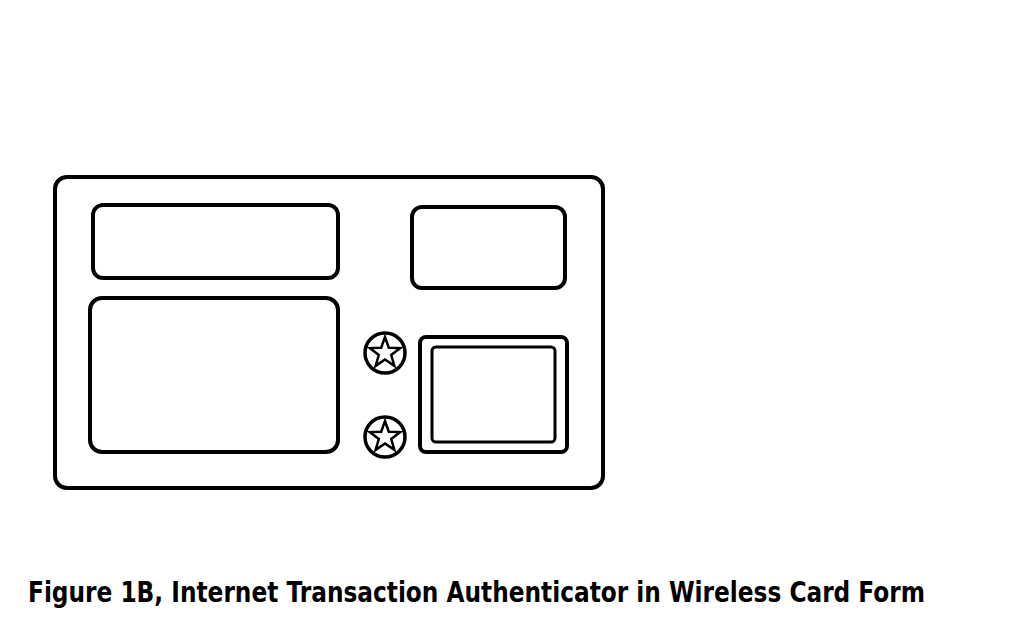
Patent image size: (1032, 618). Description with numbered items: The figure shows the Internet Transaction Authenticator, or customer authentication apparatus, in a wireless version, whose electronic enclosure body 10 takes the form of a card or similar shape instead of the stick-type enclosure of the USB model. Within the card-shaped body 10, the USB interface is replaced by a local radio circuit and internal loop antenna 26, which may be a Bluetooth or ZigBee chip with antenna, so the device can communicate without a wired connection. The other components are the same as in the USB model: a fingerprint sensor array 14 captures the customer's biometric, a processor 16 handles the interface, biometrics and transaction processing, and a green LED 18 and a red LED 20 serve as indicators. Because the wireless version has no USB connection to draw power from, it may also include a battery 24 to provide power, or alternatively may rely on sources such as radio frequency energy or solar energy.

The electronic enclosure body 10 is at (438, 293).
The fingerprint sensor array 14 is at (624, 387).
The processor 16 is at (617, 244).
The green LED 18 is at (597, 430).
The red LED 20 is at (493, 215).
The battery 24 is at (231, 166).
The local radio circuit and internal loop antenna 26 is at (229, 284).